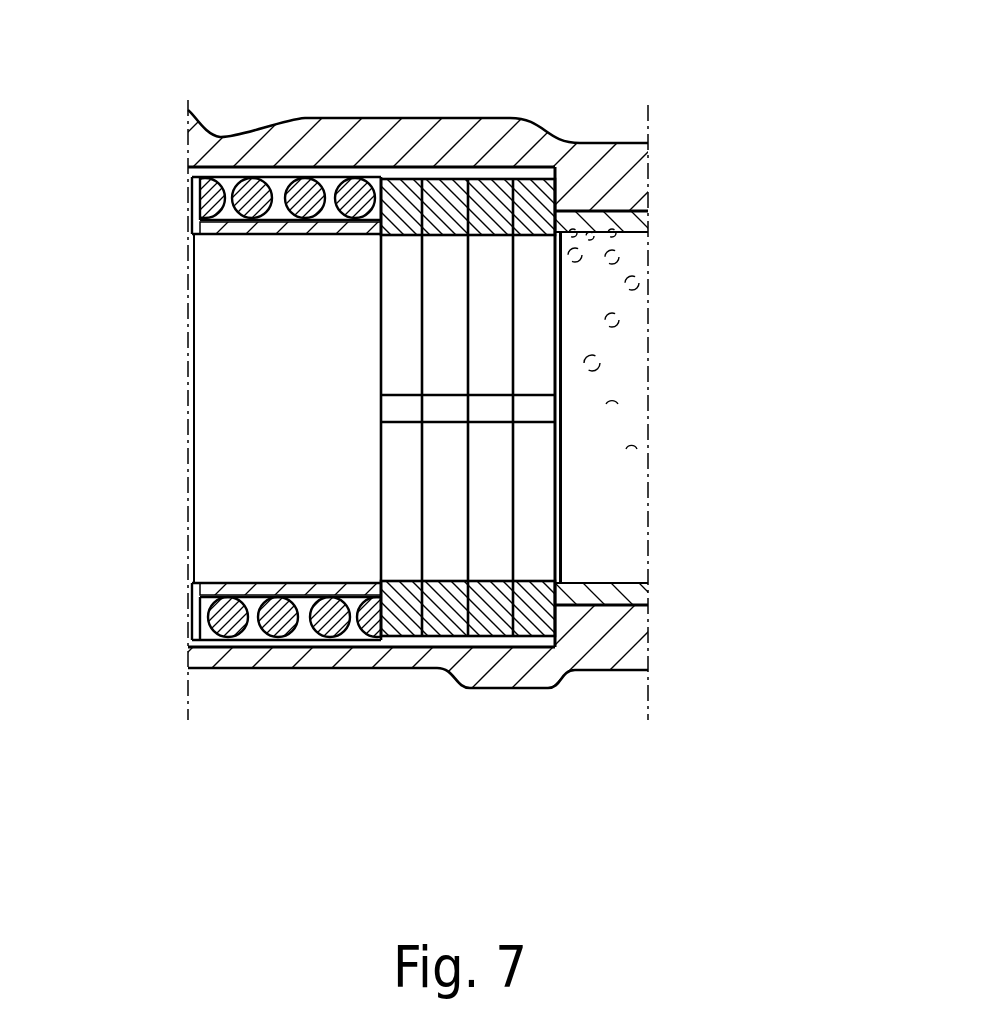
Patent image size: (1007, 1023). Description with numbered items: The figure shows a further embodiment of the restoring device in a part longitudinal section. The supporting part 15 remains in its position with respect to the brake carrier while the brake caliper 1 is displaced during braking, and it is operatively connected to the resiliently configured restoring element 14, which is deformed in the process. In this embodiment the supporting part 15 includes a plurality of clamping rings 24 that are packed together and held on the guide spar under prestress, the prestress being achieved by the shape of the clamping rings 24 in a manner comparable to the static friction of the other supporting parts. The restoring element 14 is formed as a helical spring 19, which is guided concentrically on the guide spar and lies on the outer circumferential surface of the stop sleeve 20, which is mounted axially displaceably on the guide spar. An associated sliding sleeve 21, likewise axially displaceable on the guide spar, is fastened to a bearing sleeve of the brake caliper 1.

The brake caliper 1 is at (387, 136).
The restoring element 14 is at (230, 641).
The supporting part 15 is at (480, 180).
The helical spring 19 is at (283, 618).
The stop sleeve 20 is at (260, 228).
The sliding sleeve 21 is at (600, 222).
The clamping rings 24 is at (400, 525).